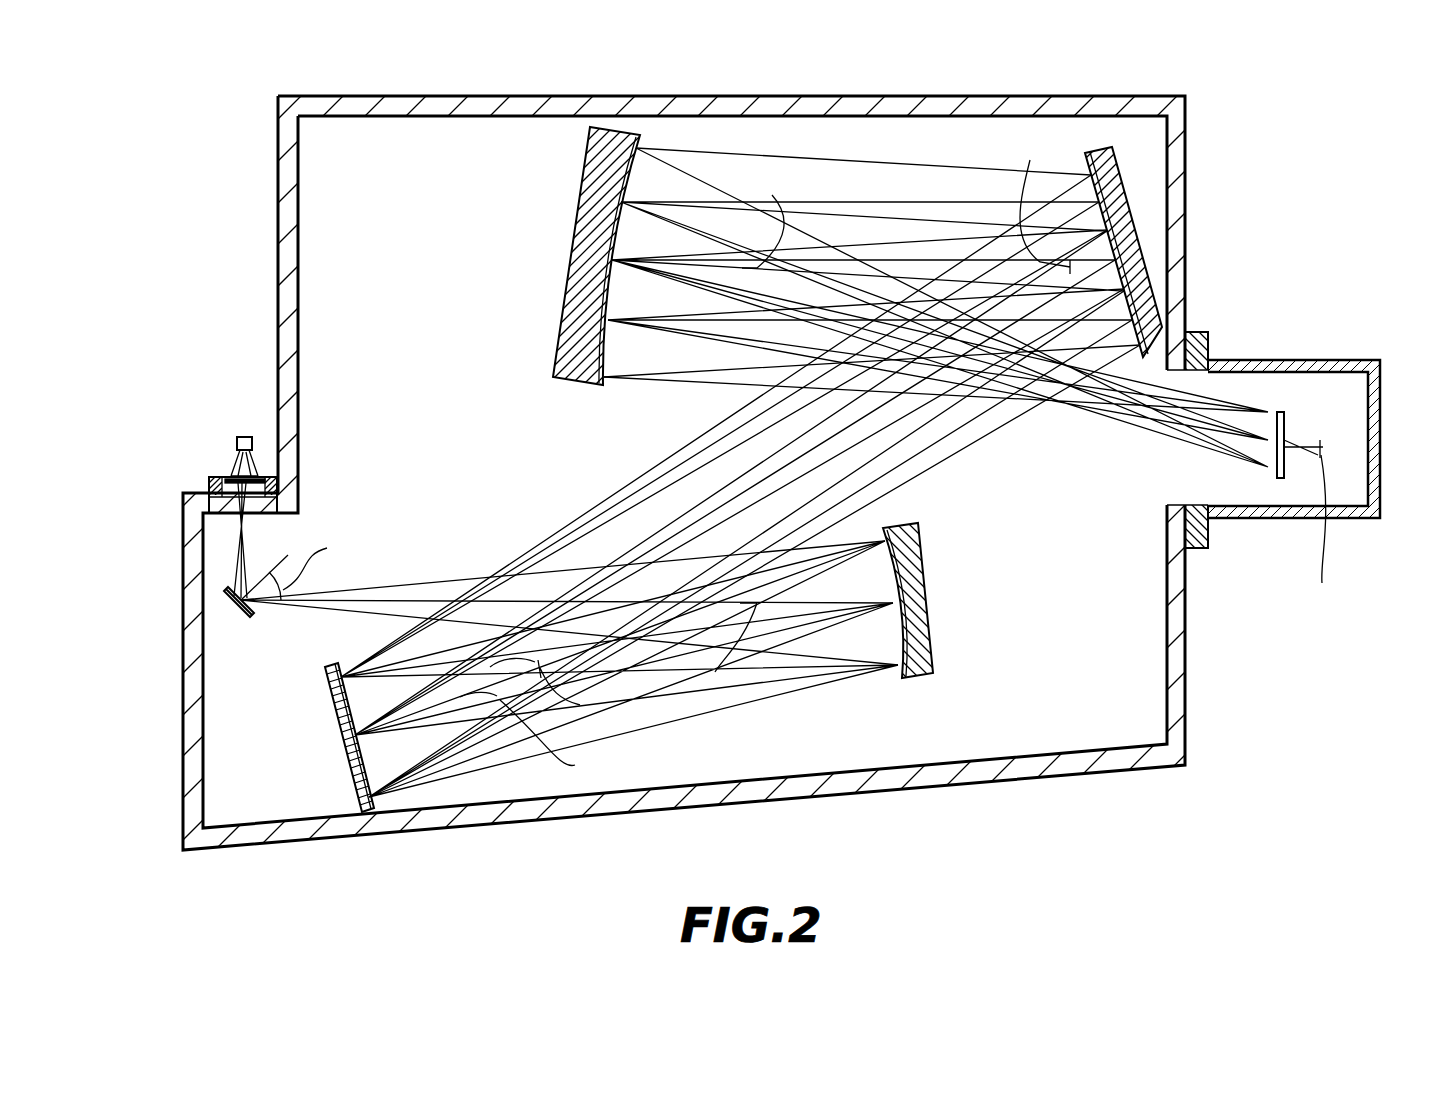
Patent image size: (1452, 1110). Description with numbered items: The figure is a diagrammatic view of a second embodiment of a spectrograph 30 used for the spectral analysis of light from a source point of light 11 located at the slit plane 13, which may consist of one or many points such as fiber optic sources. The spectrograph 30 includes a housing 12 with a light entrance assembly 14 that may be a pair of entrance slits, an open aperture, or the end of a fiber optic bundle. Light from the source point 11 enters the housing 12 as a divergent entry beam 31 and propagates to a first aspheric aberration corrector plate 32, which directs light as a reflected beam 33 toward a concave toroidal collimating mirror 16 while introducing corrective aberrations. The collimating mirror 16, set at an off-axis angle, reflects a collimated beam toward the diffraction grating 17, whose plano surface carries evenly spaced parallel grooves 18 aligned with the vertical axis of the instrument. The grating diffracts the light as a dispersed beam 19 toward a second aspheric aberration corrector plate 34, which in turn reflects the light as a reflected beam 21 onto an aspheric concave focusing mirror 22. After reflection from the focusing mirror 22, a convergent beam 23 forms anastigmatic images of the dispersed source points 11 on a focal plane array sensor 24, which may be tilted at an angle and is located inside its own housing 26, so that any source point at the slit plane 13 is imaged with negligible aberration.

The spectrograph 30 is at (761, 473).
The housing 12 is at (278, 268).
The source point of light 11 is at (243, 437).
The slit plane 13 is at (230, 465).
The light entrance assembly 14 is at (212, 487).
The divergent entry beam 31 is at (255, 552).
The first aspheric aberration corrector plate 32 is at (250, 614).
The reflected beam 33 is at (462, 573).
The collimating mirror 16 is at (920, 630).
The diffraction grating 17 is at (325, 700).
The grooves 18 is at (350, 760).
The dispersed beam 19 is at (660, 525).
The second aspheric aberration corrector plate 34 is at (1120, 260).
The reflected beam 21 is at (905, 215).
The aspheric concave focusing mirror 22 is at (570, 343).
The convergent beam 23 is at (1123, 405).
The focal plane array sensor 24 is at (1284, 437).
The housing 26 is at (1380, 384).